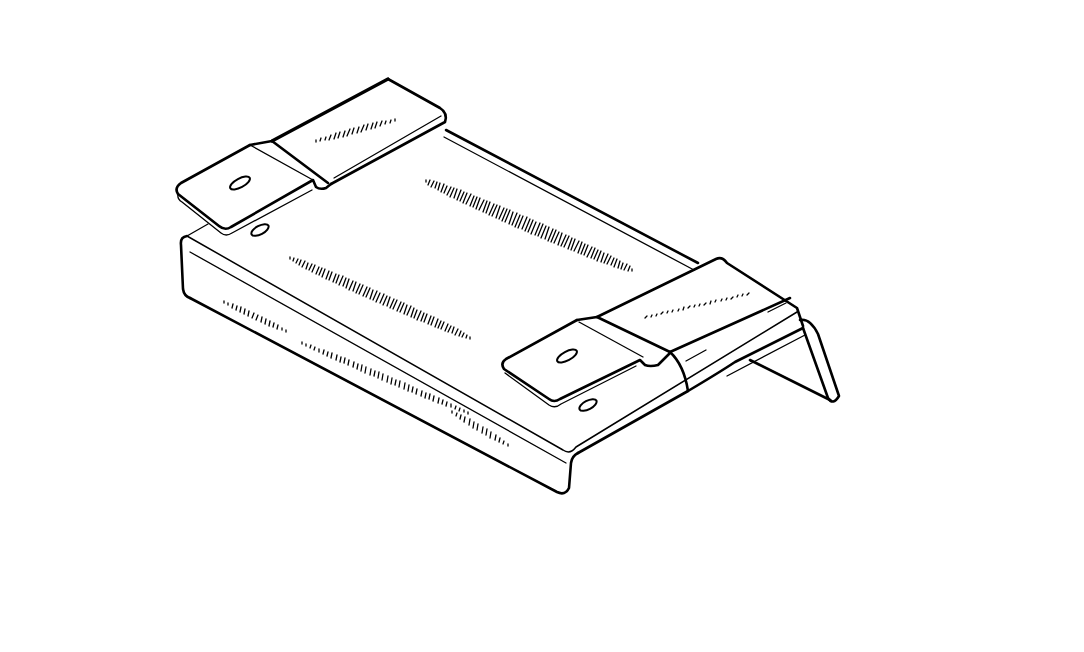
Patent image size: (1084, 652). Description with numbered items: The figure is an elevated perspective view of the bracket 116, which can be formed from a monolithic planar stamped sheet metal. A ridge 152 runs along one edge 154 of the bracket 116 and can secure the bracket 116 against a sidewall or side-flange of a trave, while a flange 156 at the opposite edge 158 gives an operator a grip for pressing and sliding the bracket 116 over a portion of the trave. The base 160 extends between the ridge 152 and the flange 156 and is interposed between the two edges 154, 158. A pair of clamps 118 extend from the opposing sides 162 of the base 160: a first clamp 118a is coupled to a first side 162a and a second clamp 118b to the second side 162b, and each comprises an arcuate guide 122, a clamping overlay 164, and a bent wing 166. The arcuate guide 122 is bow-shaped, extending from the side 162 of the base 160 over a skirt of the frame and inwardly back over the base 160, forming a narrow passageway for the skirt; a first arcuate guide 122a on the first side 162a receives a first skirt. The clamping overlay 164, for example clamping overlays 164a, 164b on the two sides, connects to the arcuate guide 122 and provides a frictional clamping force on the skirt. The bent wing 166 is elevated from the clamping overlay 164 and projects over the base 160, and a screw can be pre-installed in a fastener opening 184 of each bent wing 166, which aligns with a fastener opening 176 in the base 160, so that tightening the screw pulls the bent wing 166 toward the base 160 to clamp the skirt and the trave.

The bracket 116 is at (655, 108).
The clamp 118 is at (257, 133).
The first clamp 118a is at (723, 393).
The second clamp 118b is at (386, 73).
The arcuate guide 122 is at (776, 296).
The first arcuate guide 122a is at (797, 318).
The ridge 152 is at (367, 387).
The edge 154 is at (262, 339).
The flange 156 is at (843, 381).
The opposite edge 158 is at (787, 381).
The base 160 is at (522, 200).
The side 162 is at (203, 102).
The first side 162a is at (780, 413).
The second side 162b is at (283, 130).
The clamping overlay 164 is at (730, 290).
The clamping overlay of the first clamp 164a is at (690, 281).
The clamping overlay of the second clamp 164b is at (418, 112).
The bent wing 166 is at (175, 193).
The fastener opening 176 is at (250, 233).
The fastener opening 184 is at (233, 180).